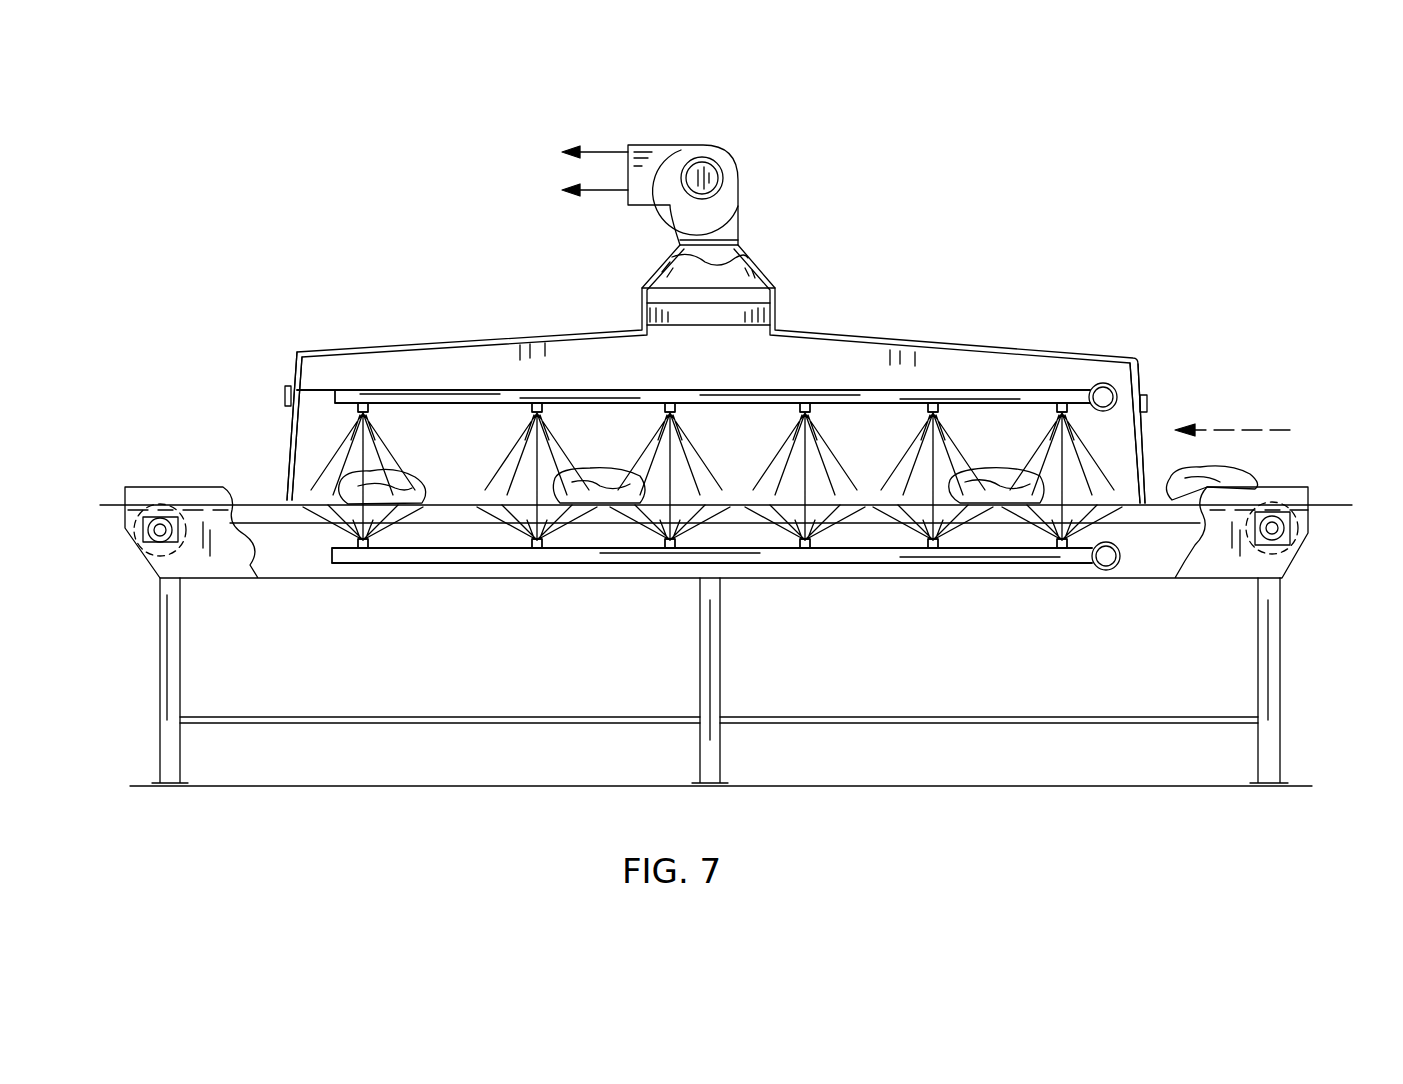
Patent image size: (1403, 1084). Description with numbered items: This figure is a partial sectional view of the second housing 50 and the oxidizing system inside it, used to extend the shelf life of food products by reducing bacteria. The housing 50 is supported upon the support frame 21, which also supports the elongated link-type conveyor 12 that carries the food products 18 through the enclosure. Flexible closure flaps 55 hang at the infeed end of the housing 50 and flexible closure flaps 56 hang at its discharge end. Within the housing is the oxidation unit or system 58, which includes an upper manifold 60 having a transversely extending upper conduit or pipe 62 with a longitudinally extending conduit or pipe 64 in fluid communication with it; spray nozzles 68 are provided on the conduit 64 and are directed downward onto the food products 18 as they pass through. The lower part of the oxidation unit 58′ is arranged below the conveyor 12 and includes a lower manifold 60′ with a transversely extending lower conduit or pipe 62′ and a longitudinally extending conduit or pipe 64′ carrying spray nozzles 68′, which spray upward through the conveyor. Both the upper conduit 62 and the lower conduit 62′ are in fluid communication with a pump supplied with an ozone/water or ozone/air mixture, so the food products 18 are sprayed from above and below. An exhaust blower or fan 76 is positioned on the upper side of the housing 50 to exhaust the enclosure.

The exhaust blower or fan 76 is at (748, 180).
The second housing 50 is at (950, 346).
The flexible closure flaps 56 is at (285, 455).
The flexible closure flaps 55 is at (1145, 440).
The oxidation unit or system 58 is at (695, 380).
The longitudinally extending conduit or pipe 64 is at (832, 400).
The upper manifold 60 is at (1022, 388).
The upper conduit or pipe 62 is at (1105, 390).
The spray nozzles 68 is at (530, 412).
The lower oxidation unit 58′ is at (665, 588).
The longitudinally extending conduit or pipe 64′ is at (838, 564).
The lower manifold 60′ is at (960, 565).
The lower conduit or pipe 62′ is at (1098, 572).
The spray nozzles 68′ is at (528, 550).
The conveyor 12 is at (1345, 502).
The food products 18 is at (1235, 478).
The support frame 21 is at (598, 745).